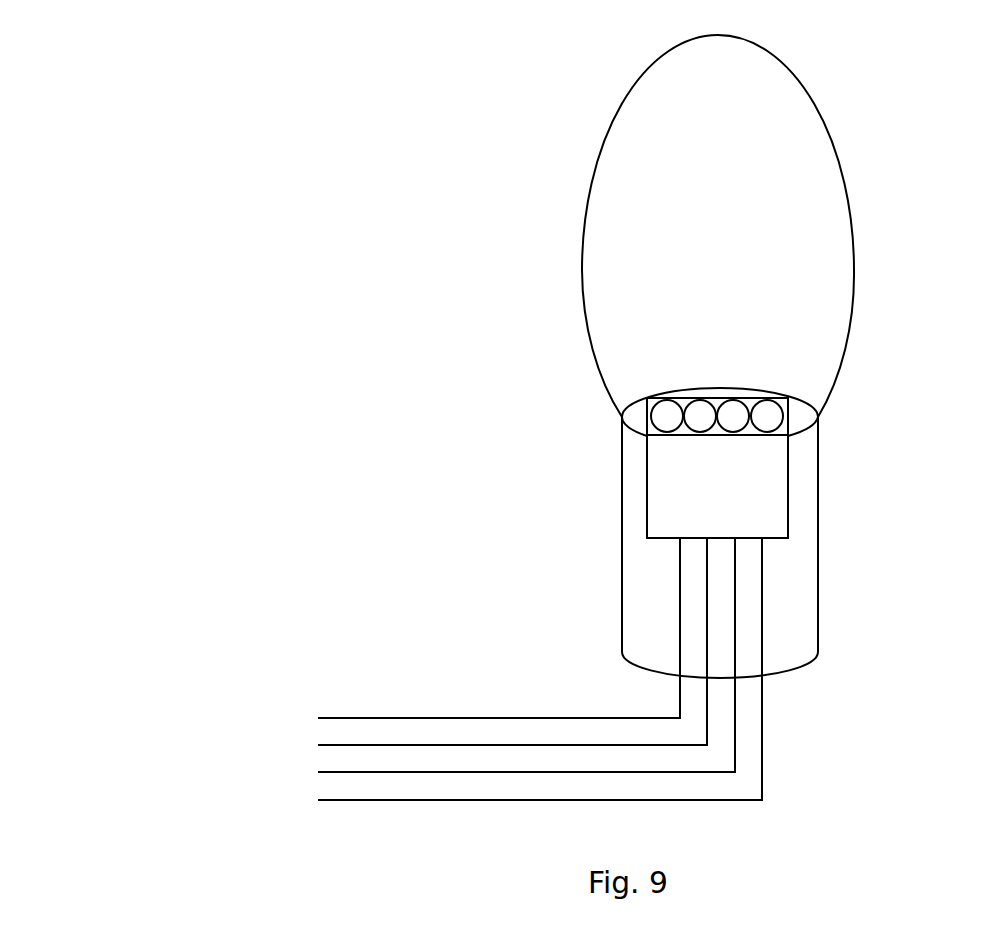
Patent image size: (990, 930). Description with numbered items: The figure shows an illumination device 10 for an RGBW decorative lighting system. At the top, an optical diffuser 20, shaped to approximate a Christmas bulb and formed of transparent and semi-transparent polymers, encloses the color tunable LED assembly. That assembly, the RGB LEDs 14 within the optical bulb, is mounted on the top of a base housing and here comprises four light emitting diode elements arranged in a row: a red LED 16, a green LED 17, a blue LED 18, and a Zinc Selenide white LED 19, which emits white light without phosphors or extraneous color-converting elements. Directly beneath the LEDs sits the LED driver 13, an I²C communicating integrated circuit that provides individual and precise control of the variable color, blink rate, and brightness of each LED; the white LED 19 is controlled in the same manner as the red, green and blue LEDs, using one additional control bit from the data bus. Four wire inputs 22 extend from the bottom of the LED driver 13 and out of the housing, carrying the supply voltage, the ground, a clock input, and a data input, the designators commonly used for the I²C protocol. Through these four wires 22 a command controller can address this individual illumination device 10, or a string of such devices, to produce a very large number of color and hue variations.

The illumination device 10 is at (383, 226).
The LED driver 13 is at (647, 485).
The RGB LEDs 14 is at (793, 410).
The red LED 16 is at (659, 402).
The green LED 17 is at (693, 402).
The blue LED 18 is at (734, 402).
The ZnSe white LED 19 is at (770, 400).
The optical diffuser 20 is at (622, 103).
The four wire inputs 22 is at (184, 691).